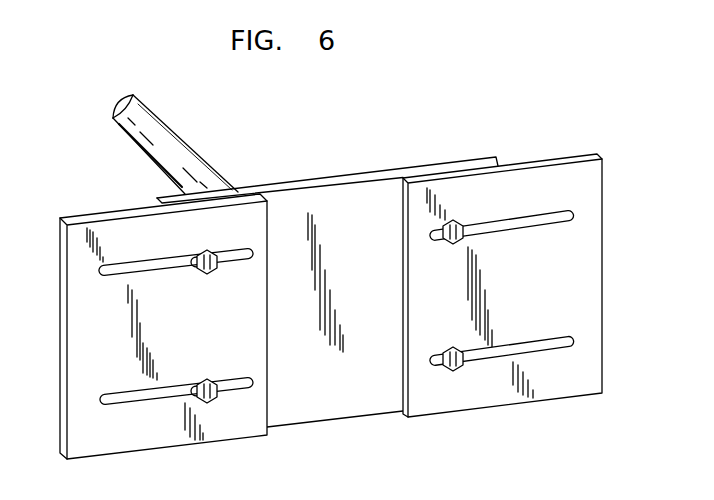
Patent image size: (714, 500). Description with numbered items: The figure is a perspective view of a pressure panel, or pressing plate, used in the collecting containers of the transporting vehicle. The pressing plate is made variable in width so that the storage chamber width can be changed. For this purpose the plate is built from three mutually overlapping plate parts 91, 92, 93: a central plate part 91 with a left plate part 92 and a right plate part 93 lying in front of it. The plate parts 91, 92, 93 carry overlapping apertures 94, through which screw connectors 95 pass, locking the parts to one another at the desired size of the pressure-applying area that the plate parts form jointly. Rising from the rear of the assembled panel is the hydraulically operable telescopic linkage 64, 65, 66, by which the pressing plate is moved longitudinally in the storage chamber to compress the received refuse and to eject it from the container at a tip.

The hydraulically operable telescopic linkage 66 is at (215, 144).
The hydraulically operable telescopic linkage 65 is at (175, 144).
The hydraulically operable telescopic linkage 64 is at (173, 148).
The plate part 91 is at (310, 413).
The plate part 92 is at (80, 332).
The plate part 93 is at (588, 306).
The overlapping apertures 94 is at (165, 262).
The screw connectors 95 is at (212, 403).